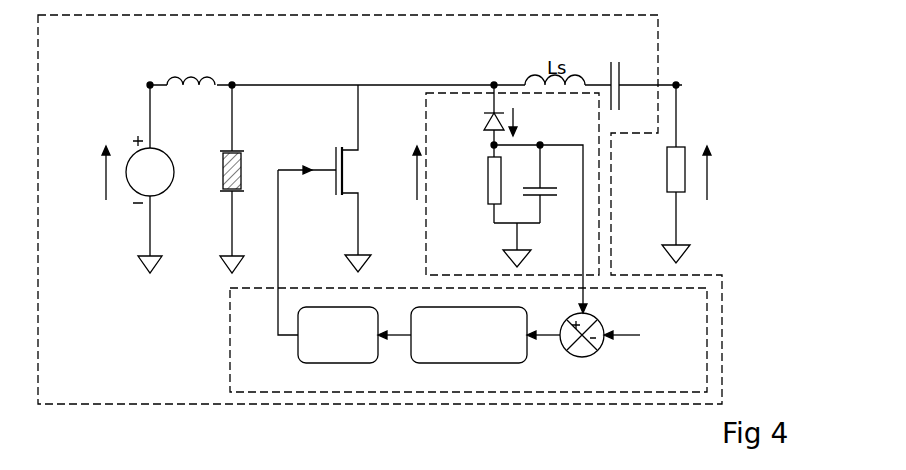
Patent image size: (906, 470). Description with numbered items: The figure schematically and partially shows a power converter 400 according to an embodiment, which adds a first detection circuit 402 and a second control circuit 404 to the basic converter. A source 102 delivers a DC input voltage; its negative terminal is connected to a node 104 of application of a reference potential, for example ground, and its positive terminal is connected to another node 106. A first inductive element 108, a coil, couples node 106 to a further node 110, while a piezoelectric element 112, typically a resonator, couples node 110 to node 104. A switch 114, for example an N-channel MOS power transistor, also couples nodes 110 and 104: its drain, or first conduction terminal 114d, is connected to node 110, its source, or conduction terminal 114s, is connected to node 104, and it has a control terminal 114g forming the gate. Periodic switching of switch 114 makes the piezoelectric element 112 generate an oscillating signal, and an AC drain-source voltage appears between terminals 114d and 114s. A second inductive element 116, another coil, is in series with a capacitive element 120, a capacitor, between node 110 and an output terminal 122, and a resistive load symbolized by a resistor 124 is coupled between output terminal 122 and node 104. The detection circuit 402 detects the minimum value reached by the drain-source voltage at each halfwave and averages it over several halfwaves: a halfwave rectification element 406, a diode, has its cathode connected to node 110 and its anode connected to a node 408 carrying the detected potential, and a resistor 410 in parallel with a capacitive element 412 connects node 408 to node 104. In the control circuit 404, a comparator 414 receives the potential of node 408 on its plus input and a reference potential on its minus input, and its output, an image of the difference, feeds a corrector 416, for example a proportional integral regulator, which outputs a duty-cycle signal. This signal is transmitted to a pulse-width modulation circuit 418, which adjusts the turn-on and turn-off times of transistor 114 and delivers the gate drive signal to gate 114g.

The power converter 400 is at (660, 35).
The first detection circuit 402 is at (447, 93).
The second control circuit 404 is at (447, 393).
The source 102 is at (118, 134).
The node of application of a reference potential 104 is at (147, 270).
The node 106 is at (148, 84).
The first inductive element 108 is at (215, 82).
The node 110 is at (234, 85).
The piezoelectric element 112 is at (250, 146).
The switch 114 is at (349, 170).
The first conduction terminal 114d is at (357, 148).
The control terminal 114g is at (328, 173).
The conduction terminal 114s is at (357, 225).
The second inductive element 116 is at (494, 85).
The capacitive element 120 is at (613, 50).
The output terminal 122 is at (680, 85).
The resistor 124 is at (667, 190).
The halfwave rectification element 406 is at (486, 125).
The node 408 is at (492, 146).
The resistor 410 is at (487, 204).
The capacitive element 412 is at (548, 211).
The comparator 414 is at (596, 353).
The corrector 416 is at (460, 364).
The pulse-width modulation circuit 418 is at (330, 364).